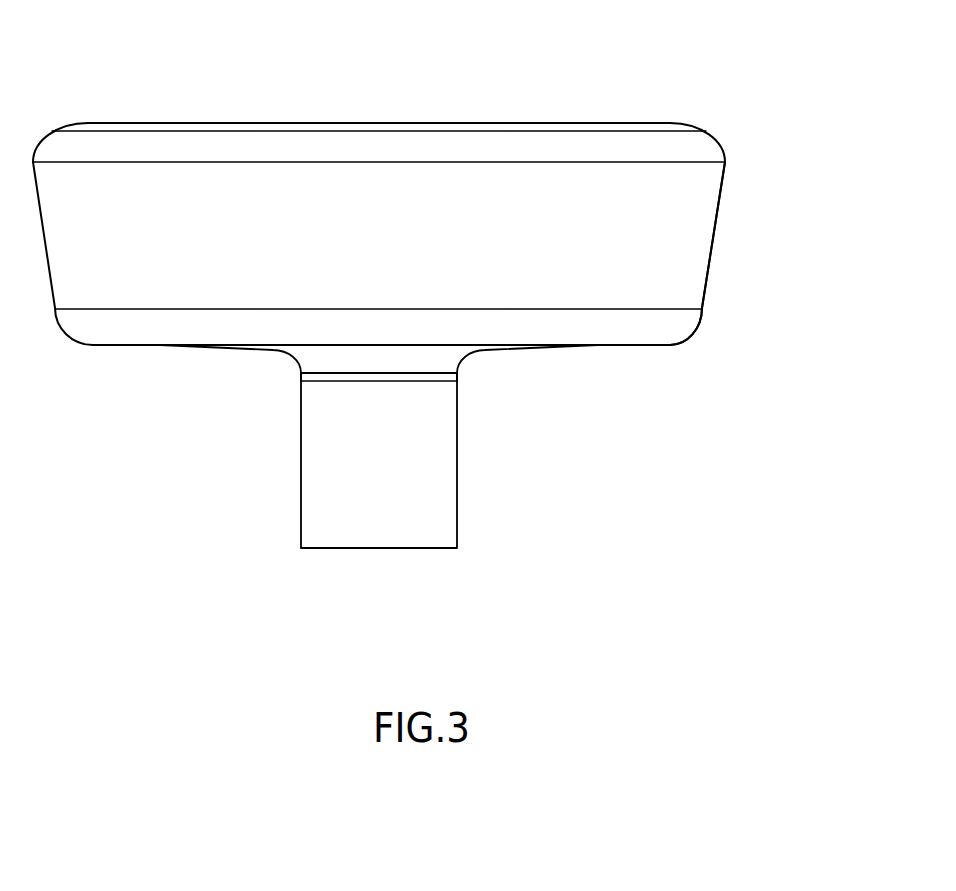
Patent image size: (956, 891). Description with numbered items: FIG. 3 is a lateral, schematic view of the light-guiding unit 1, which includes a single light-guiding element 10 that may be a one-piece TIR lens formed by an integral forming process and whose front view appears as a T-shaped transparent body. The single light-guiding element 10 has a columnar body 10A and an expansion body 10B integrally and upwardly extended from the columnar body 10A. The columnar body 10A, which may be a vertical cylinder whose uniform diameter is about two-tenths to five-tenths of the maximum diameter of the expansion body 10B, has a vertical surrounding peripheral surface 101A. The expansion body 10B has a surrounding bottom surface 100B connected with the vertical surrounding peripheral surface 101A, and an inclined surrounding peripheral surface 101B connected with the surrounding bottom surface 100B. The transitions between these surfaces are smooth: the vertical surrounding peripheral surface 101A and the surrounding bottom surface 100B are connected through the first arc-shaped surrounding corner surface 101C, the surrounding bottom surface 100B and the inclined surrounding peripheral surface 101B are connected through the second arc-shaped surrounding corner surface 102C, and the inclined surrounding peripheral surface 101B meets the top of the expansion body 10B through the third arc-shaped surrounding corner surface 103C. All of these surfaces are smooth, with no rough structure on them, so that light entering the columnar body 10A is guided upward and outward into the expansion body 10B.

The light-guiding unit 1 is at (152, 105).
The single light-guiding element 10 is at (205, 578).
The columnar body 10A is at (322, 473).
The expansion body 10B is at (215, 265).
The surrounding bottom surface 100B is at (562, 347).
The vertical surrounding peripheral surface 101A is at (438, 518).
The inclined surrounding peripheral surface 101B is at (693, 241).
The first arc-shaped surrounding corner surface 101C is at (413, 363).
The second arc-shaped surrounding corner surface 102C is at (648, 325).
The third arc-shaped surrounding corner surface 103C is at (703, 146).